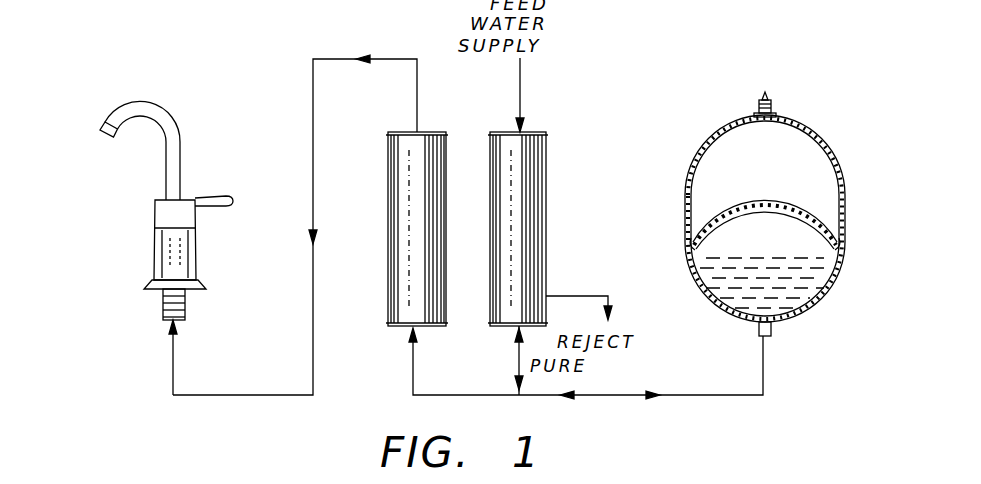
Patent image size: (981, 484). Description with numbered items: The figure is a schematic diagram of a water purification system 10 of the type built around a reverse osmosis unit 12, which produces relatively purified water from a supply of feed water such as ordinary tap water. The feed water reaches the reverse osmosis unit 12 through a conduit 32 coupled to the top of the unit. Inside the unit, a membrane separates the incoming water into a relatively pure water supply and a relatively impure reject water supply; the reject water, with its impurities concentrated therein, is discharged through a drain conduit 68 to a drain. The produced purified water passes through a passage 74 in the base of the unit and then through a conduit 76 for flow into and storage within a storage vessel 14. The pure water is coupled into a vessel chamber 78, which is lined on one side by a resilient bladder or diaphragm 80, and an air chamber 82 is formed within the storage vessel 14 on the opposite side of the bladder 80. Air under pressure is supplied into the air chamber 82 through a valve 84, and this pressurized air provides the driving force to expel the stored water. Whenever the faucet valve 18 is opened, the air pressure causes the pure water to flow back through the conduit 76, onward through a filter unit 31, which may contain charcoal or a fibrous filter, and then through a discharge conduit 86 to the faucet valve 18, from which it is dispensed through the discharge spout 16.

The water purification system 10 is at (636, 96).
The reverse osmosis unit 12 is at (560, 202).
The storage vessel 14 is at (818, 120).
The discharge spout 16 is at (150, 104).
The faucet valve 18 is at (155, 251).
The filter unit 31 is at (403, 211).
The conduit 32 is at (521, 84).
The drain conduit 68 is at (575, 296).
The passage 74 is at (518, 362).
The conduit 76 is at (702, 396).
The vessel chamber 78 is at (784, 298).
The bladder 80 is at (800, 204).
The air chamber 82 is at (740, 146).
The valve 84 is at (773, 102).
The discharge conduit 86 is at (386, 60).